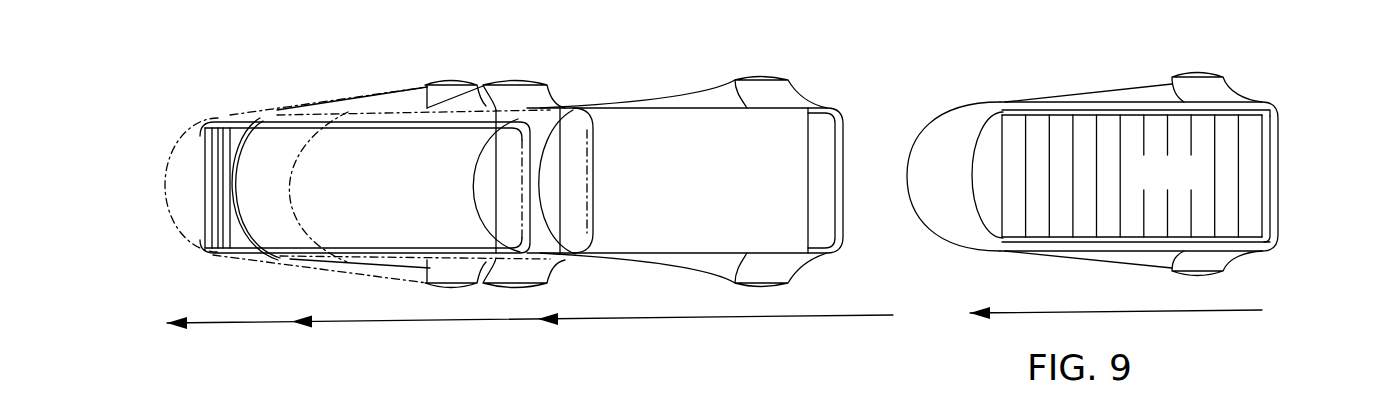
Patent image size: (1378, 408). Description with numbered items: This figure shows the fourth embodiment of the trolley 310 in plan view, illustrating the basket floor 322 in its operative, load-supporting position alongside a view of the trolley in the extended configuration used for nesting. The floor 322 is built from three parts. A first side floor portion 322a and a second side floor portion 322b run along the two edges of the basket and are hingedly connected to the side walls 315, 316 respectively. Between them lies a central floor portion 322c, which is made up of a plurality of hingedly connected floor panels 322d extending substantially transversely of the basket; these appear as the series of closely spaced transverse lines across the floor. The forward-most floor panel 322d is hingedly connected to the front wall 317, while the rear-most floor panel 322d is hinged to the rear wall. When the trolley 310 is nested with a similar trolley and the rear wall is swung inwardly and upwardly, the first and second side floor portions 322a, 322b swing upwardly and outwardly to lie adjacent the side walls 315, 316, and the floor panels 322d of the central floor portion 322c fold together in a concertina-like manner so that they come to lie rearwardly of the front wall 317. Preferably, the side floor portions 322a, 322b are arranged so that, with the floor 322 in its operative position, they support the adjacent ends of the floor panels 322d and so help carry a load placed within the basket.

The trolley 310 is at (936, 94).
The side wall 315 is at (705, 100).
The side wall 316 is at (707, 265).
The front wall 317 is at (188, 170).
The floor 322 is at (1177, 199).
The first side floor portion 322a is at (1082, 112).
The second side floor portion 322b is at (1137, 238).
The central floor portion 322c is at (1202, 188).
The floor panels 322d is at (1253, 133).